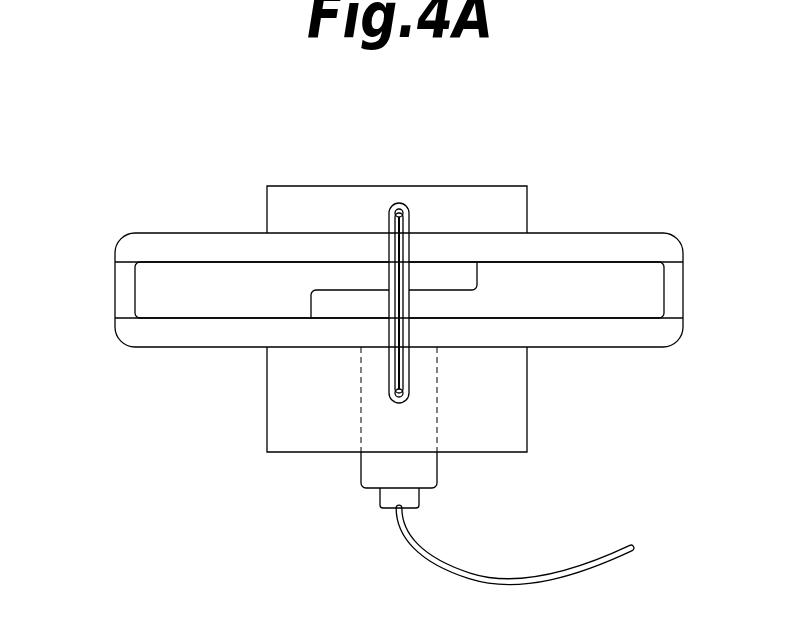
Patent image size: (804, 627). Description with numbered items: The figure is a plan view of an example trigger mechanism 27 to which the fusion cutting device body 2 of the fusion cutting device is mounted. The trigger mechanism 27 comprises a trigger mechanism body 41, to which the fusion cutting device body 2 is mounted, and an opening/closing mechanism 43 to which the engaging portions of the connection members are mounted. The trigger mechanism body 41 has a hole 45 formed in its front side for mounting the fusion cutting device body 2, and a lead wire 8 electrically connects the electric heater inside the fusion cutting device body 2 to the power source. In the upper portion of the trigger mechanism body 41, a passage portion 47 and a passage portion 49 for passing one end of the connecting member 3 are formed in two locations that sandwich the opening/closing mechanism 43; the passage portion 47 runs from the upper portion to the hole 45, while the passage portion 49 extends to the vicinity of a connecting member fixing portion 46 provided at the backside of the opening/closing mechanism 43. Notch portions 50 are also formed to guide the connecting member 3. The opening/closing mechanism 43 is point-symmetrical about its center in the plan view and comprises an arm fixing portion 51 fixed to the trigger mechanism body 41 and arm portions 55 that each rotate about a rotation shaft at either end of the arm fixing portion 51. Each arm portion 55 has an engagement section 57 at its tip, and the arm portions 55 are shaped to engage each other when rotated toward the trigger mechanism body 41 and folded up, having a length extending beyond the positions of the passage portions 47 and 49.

The trigger mechanism 27 is at (621, 130).
The opening/closing mechanism 43 is at (630, 224).
The arm fixing portion 51 is at (683, 244).
The arm portions 55 is at (147, 283).
The engagement section 57 is at (454, 277).
The connecting member fixing portion 46 is at (436, 186).
The trigger mechanism body 41 is at (527, 405).
The hole 45 is at (437, 430).
The fusion cutting device body 2 is at (368, 490).
The lead wire 8 is at (612, 565).
The connecting member 3 is at (391, 207).
The passage portion 49 is at (399, 204).
The notch portions 50 is at (410, 373).
The passage portion 47 is at (396, 401).